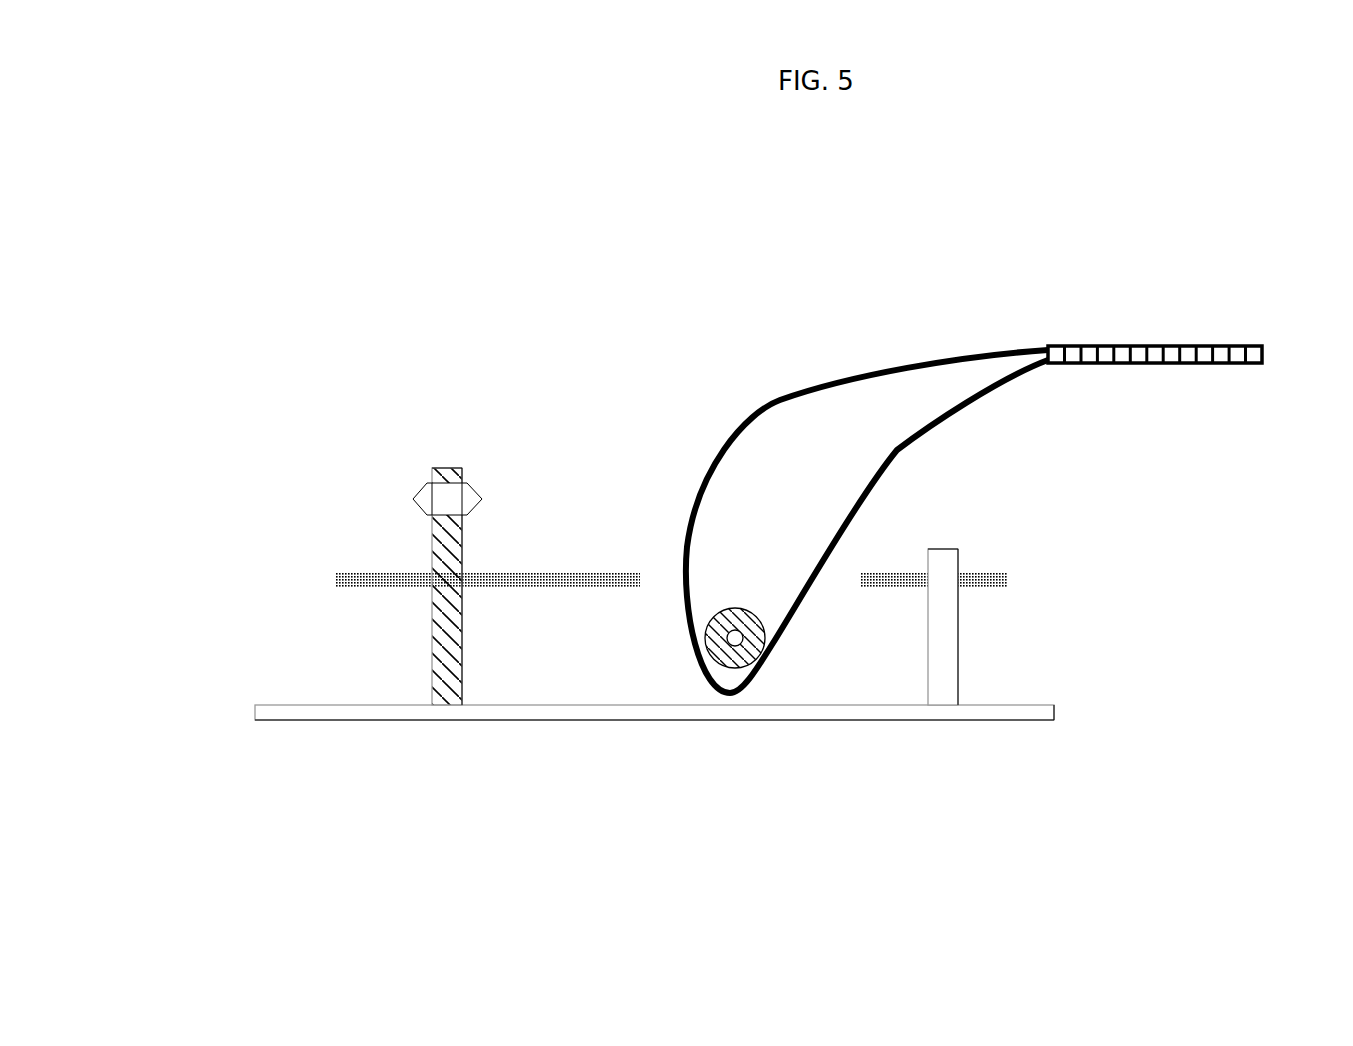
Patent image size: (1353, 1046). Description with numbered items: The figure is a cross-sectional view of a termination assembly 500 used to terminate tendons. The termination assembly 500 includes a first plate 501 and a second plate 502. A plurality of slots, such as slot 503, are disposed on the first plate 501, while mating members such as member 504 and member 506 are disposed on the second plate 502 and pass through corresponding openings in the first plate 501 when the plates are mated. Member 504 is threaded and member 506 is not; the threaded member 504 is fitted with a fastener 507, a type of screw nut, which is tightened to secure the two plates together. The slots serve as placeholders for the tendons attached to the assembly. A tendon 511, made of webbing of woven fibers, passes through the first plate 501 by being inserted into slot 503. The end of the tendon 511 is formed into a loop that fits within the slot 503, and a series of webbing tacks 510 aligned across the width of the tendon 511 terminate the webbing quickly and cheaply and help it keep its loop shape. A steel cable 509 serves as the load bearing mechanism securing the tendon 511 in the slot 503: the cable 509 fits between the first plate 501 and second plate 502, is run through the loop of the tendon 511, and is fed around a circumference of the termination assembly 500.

The termination assembly 500 is at (218, 253).
The first plate 501 is at (335, 575).
The second plate 502 is at (255, 712).
The slot 503 is at (664, 563).
The threaded member 504 is at (432, 540).
The non-threaded member 506 is at (958, 565).
The fastener 507 is at (414, 497).
The steel cable 509 is at (692, 604).
The webbing tacks 510 is at (1260, 320).
The tendon 511 is at (820, 383).